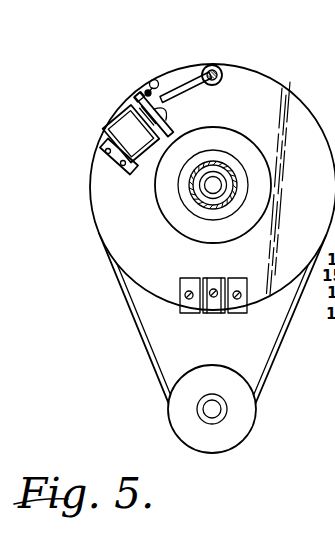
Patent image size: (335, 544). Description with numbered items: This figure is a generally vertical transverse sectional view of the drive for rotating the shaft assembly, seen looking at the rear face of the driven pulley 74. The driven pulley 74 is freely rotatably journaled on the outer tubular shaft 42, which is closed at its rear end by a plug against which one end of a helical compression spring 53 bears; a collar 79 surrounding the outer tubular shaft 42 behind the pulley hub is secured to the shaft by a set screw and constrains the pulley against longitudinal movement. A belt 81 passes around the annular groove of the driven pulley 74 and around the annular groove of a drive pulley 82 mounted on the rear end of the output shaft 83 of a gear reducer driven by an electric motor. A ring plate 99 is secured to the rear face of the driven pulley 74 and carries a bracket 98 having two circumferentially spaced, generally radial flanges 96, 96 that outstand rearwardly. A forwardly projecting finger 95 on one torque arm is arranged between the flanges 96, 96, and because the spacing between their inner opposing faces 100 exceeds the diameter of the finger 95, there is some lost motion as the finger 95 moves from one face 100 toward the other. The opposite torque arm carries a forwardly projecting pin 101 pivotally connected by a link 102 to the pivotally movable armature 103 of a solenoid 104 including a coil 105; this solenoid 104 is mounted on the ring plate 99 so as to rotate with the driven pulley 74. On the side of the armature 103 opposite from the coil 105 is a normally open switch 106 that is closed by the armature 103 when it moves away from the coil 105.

The outer tubular shaft 42 is at (205, 193).
The helical compression spring 53 is at (209, 206).
The driven pulley 74 is at (238, 142).
The collar 79 is at (226, 215).
The belt 81 is at (150, 342).
The drive pulley 82 is at (247, 430).
The output shaft 83 is at (212, 415).
The finger 95 is at (212, 300).
The flanges 96 is at (200, 306).
The bracket 98 is at (181, 285).
The ring plate 99 is at (272, 82).
The inner opposing faces 100 is at (222, 284).
The pin 101 is at (216, 66).
The link 102 is at (184, 84).
The armature 103 is at (134, 97).
The solenoid 104 is at (115, 124).
The coil 105 is at (110, 137).
The normally open switch 106 is at (151, 77).